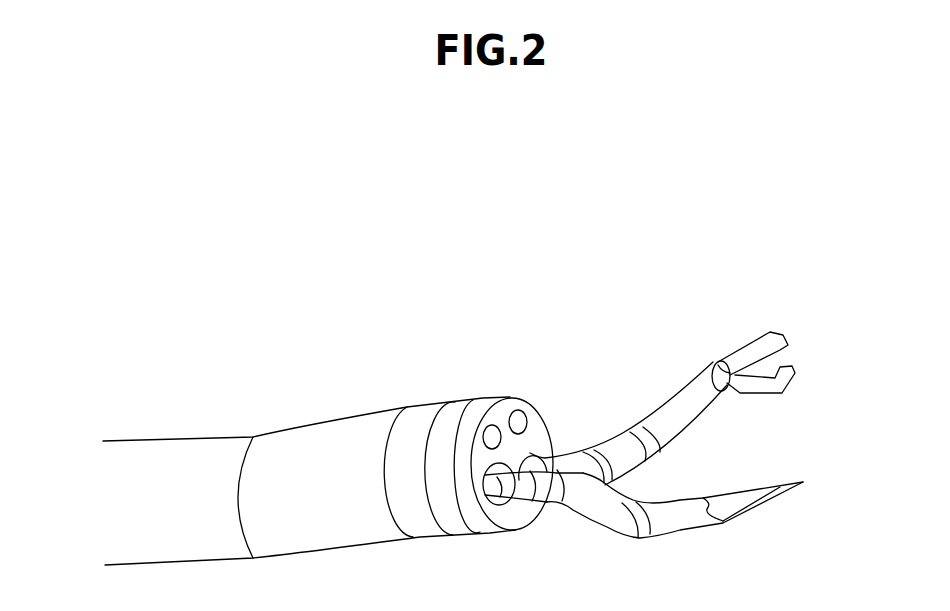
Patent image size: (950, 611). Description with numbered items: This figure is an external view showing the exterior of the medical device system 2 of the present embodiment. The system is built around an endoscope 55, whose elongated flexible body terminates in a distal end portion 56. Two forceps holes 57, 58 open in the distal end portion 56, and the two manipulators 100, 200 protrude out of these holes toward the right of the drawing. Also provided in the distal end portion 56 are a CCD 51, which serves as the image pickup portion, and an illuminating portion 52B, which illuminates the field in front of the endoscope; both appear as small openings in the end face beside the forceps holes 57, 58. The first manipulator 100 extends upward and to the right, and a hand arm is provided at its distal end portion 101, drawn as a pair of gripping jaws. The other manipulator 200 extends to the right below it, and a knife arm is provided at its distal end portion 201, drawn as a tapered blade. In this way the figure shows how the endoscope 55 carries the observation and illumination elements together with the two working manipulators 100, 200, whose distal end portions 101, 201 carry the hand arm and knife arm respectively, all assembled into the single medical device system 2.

The medical device system 2 is at (578, 238).
The endoscope 55 is at (349, 345).
The distal end portion 56 is at (440, 537).
The forceps hole 57 is at (518, 529).
The forceps hole 58 is at (539, 450).
The CCD 51 is at (489, 424).
The illuminating portion 52B is at (516, 410).
The manipulator 100 is at (680, 388).
The distal end portion 101 is at (747, 328).
The manipulator 200 is at (683, 537).
The distal end portion 201 is at (800, 498).